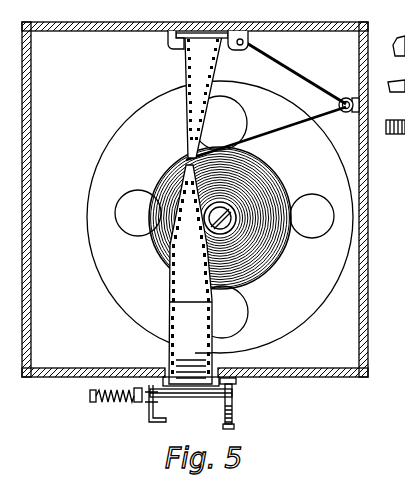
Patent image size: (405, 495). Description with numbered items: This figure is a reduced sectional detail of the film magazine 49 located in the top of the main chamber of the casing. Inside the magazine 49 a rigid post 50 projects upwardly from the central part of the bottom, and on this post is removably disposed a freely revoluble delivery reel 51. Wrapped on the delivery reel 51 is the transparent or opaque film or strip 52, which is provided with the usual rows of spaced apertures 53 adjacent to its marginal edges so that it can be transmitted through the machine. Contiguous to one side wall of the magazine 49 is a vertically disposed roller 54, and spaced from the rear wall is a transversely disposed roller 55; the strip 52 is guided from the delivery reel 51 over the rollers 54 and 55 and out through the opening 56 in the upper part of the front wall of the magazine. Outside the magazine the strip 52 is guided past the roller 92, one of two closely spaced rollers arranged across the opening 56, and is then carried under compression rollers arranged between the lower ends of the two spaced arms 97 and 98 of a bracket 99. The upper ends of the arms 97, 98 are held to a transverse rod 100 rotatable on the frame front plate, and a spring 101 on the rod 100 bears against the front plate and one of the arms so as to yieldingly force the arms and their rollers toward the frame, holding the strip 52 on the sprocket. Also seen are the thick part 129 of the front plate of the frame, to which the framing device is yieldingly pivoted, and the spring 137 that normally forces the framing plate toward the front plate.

The magazine 49 is at (368, 313).
The rigid post 50 is at (232, 232).
The delivery reel 51 is at (311, 322).
The film or strip 52 is at (281, 129).
The spaced apertures 53 is at (213, 322).
The vertically disposed roller 54 is at (339, 103).
The transversely disposed roller 55 is at (180, 48).
The opening 56 is at (218, 369).
The roller 92 is at (236, 385).
The arm 97 is at (158, 422).
The arm 98 is at (234, 428).
The bracket 99 is at (234, 411).
The transverse rod 100 is at (195, 399).
The spring 101 is at (122, 406).
The thick part of front plate 129 is at (389, 74).
The spring 137 is at (392, 136).